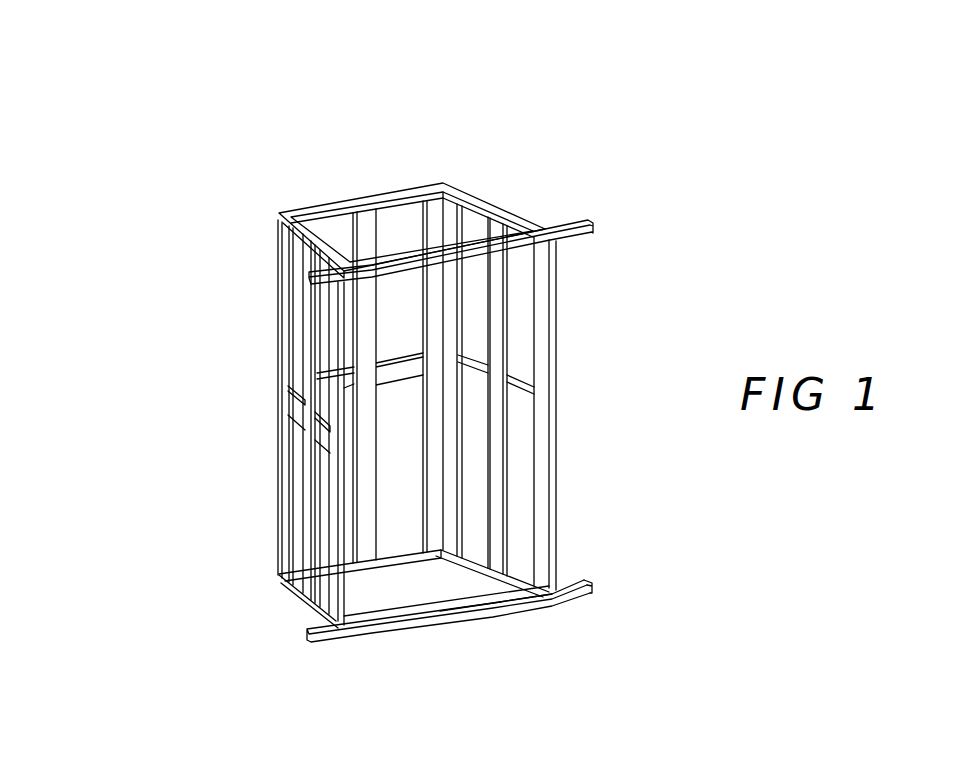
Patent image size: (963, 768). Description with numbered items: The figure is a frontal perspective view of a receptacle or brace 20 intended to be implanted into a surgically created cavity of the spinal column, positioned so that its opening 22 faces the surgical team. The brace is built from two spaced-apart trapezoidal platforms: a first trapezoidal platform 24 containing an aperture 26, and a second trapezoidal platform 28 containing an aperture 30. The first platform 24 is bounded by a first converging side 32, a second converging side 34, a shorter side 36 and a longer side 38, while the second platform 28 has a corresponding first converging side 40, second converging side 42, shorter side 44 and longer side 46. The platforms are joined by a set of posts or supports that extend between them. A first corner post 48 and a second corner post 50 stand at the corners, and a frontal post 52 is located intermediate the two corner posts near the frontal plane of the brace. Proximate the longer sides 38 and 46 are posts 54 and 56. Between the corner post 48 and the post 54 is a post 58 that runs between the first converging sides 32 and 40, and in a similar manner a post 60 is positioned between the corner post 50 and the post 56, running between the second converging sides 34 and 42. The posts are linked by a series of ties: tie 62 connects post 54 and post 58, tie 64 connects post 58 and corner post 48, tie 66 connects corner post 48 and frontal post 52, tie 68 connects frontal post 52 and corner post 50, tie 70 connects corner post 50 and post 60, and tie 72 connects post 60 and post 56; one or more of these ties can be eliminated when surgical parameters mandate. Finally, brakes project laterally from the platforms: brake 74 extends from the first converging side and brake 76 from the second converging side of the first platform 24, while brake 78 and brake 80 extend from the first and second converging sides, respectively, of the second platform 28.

The receptacle or brace 20 is at (174, 332).
The opening 22 is at (476, 465).
The first trapezoidal platform 24 is at (485, 603).
The aperture 26 is at (388, 589).
The second trapezoidal platform 28 is at (418, 190).
The aperture 30 is at (397, 212).
The first converging side 32 is at (310, 610).
The second converging side 34 is at (505, 575).
The shorter side 36 is at (446, 557).
The longer side 38 is at (393, 560).
The first converging side 40 is at (312, 261).
The second converging side 42 is at (493, 198).
The shorter side 44 is at (388, 193).
The longer side 46 is at (538, 222).
The first corner post 48 is at (303, 342).
The second corner post 50 is at (450, 290).
The frontal post 52 is at (327, 204).
The post 54 is at (337, 345).
The post 56 is at (550, 340).
The post or support 58 is at (303, 307).
The post or support 60 is at (503, 302).
The tie 62 is at (317, 427).
The tie 64 is at (297, 393).
The tie 66 is at (354, 365).
The tie 68 is at (398, 360).
The tie 70 is at (470, 360).
The tie 72 is at (505, 383).
The brake 74 is at (307, 631).
The brake 76 is at (575, 583).
The brake 78 is at (291, 294).
The brake 80 is at (590, 228).